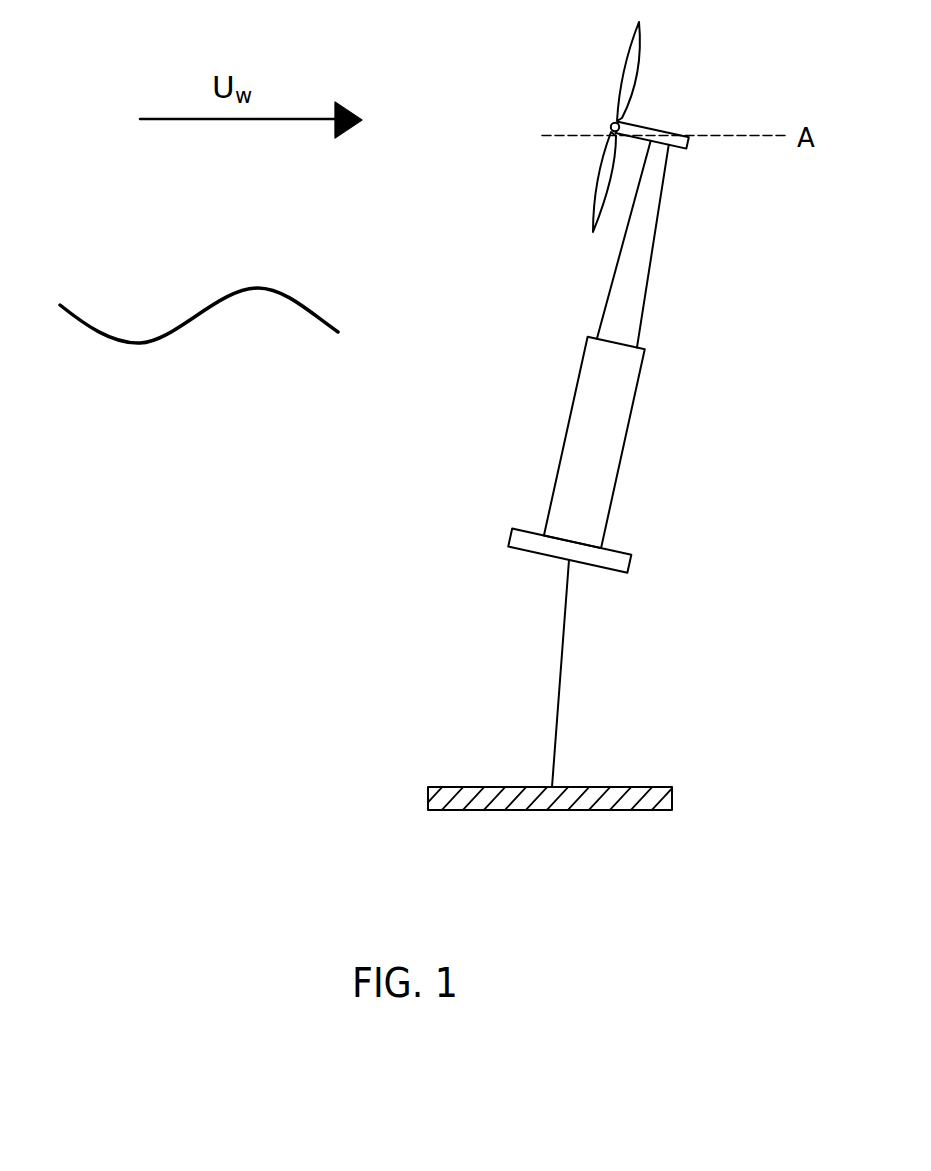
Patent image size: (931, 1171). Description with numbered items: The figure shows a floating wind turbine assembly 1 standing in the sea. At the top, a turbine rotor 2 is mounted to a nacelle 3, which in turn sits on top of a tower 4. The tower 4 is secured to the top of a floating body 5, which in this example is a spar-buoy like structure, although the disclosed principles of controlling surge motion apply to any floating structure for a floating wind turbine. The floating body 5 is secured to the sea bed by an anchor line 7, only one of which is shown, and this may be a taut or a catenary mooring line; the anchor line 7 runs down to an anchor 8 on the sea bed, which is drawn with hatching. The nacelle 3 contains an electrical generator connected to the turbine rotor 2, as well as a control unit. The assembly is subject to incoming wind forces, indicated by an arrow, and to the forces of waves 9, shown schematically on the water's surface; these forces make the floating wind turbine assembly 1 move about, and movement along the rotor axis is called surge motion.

The floating wind turbine assembly 1 is at (402, 605).
The turbine rotor 2 is at (630, 63).
The nacelle 3 is at (682, 138).
The tower 4 is at (628, 295).
The floating body 5 is at (598, 473).
The anchor line 7 is at (560, 710).
The anchor / seabed foundation 8 is at (537, 792).
The waves 9 is at (138, 343).